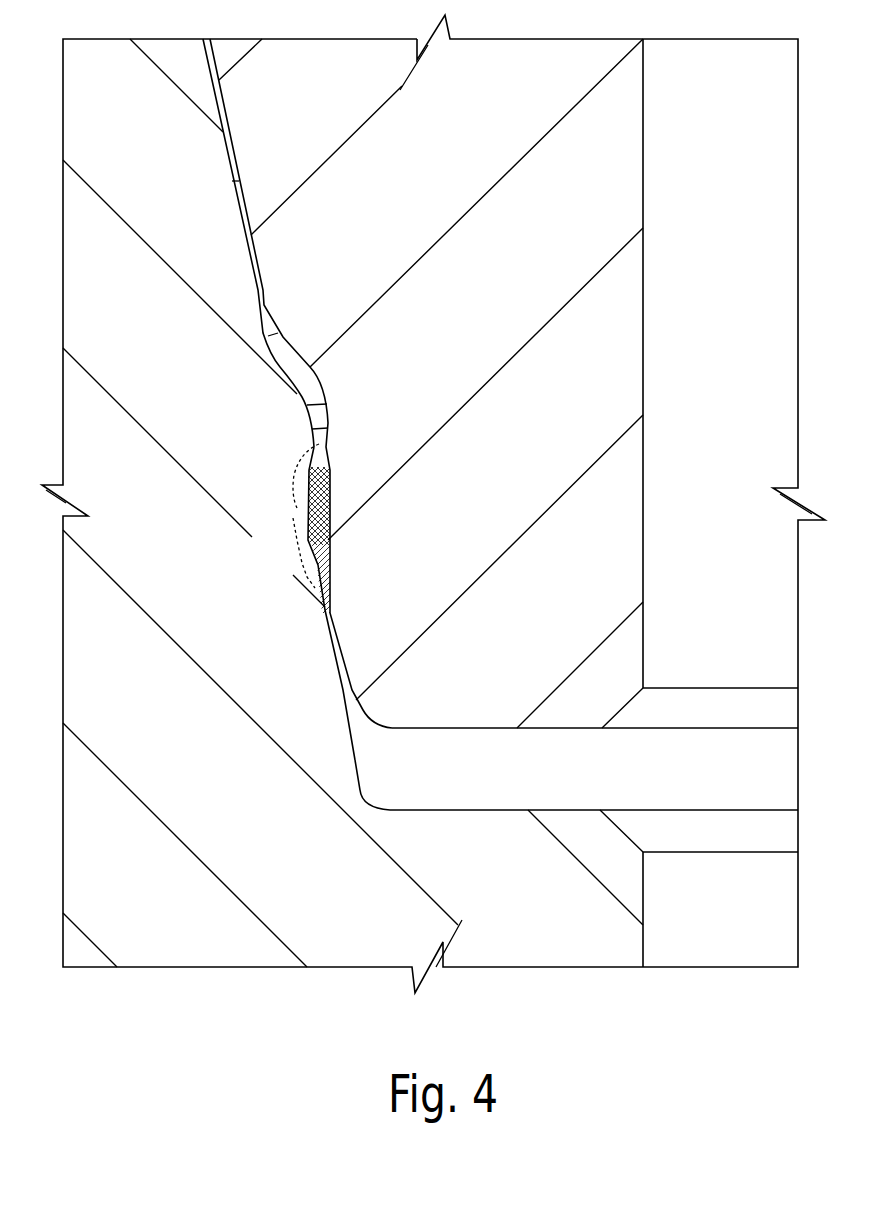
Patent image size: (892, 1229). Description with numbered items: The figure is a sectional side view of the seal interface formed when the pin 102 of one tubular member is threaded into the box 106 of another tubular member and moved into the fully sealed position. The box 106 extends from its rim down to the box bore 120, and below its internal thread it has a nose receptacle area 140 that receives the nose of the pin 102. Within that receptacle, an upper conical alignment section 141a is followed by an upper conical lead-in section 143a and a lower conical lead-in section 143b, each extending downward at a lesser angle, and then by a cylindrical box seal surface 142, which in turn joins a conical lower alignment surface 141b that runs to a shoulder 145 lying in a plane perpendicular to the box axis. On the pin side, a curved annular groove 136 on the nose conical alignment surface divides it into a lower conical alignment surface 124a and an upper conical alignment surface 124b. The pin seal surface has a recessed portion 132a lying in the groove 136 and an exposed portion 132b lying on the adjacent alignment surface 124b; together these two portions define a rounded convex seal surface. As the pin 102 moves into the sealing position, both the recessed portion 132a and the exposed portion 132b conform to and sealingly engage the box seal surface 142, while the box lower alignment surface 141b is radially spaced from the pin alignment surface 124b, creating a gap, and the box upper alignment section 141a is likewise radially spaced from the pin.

The pin 102 is at (553, 740).
The box 106 is at (364, 740).
The box bore 120 is at (643, 913).
The lower conical alignment surface 124a is at (228, 153).
The upper conical alignment surface 124b is at (330, 651).
The recessed portion of pin seal surface 132a is at (296, 465).
The exposed portion of pin seal surface 132b is at (297, 550).
The annular groove 136 is at (307, 405).
The nose receptacle area 140 is at (245, 181).
The upper conical alignment section 141a is at (258, 266).
The lower conical alignment surface 141b is at (349, 686).
The box seal surface 142 is at (331, 508).
The upper conical lead-in section 143a is at (288, 371).
The lower conical lead-in section 143b is at (328, 428).
The shoulder 145 is at (447, 810).